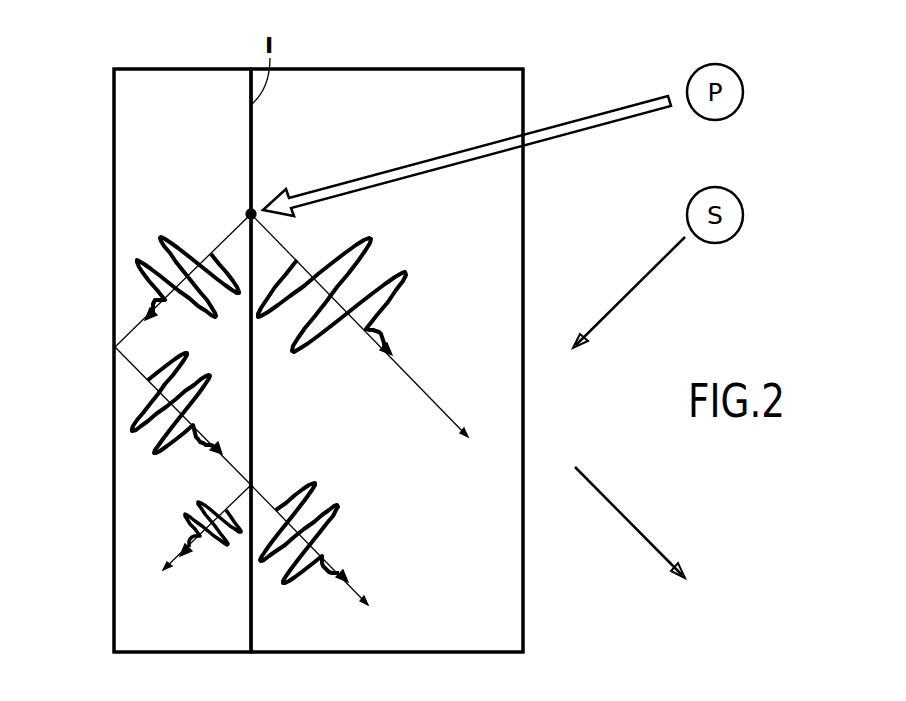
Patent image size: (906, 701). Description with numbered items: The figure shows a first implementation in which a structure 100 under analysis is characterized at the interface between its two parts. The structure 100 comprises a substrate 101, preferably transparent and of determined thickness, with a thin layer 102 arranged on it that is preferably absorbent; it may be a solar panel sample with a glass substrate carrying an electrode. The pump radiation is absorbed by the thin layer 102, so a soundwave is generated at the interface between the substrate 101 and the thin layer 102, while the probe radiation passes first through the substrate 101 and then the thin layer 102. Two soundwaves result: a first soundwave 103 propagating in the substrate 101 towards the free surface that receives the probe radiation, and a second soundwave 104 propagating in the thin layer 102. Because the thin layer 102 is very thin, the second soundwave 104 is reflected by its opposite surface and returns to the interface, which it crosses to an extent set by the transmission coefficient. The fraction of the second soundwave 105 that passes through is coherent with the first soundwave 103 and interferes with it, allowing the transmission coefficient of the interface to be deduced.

The structure 100 is at (500, 52).
The substrate 101 is at (374, 95).
The thin layer 102 is at (185, 97).
The first soundwave 103 is at (406, 272).
The second soundwave 104 is at (136, 262).
The fraction of the second soundwave 105 is at (340, 507).